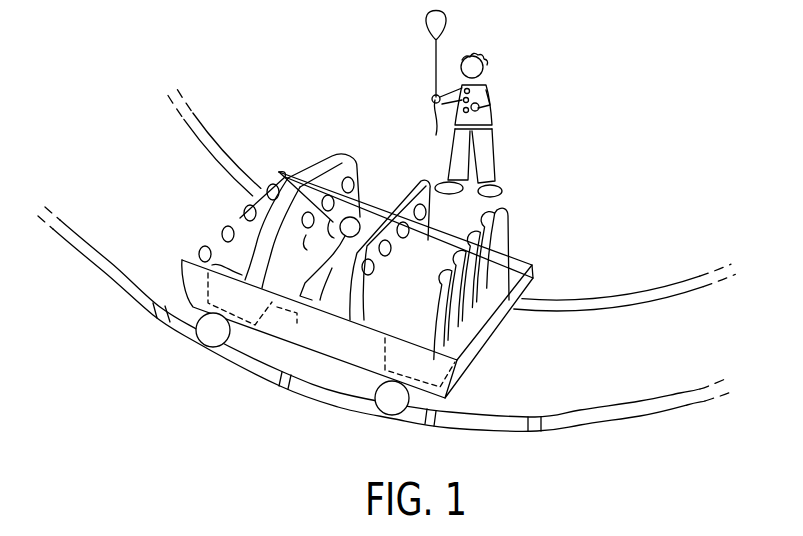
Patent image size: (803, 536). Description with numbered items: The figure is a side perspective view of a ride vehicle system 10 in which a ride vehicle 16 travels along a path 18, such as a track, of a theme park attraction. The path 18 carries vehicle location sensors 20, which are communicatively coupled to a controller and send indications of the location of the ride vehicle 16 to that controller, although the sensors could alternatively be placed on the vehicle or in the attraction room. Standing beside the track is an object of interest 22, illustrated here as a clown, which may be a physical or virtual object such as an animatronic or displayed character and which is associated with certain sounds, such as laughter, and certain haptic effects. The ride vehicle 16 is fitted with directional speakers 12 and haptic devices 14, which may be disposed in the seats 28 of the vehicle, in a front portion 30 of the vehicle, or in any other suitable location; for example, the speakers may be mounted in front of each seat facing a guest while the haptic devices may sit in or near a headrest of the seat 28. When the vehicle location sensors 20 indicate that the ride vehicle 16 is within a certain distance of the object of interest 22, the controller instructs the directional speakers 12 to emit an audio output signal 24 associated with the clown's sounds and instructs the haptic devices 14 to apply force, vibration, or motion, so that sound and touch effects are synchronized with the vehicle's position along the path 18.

The ride vehicle system 10 is at (327, 63).
The directional speakers 12 is at (362, 183).
The haptic devices 14 is at (432, 348).
The ride vehicle 16 is at (519, 258).
The path 18 is at (610, 298).
The vehicle location sensors 20 is at (535, 431).
The object of interest 22 is at (490, 85).
The audio output signal 24 is at (288, 176).
The seats 28 is at (507, 228).
The front portion 30 is at (240, 218).